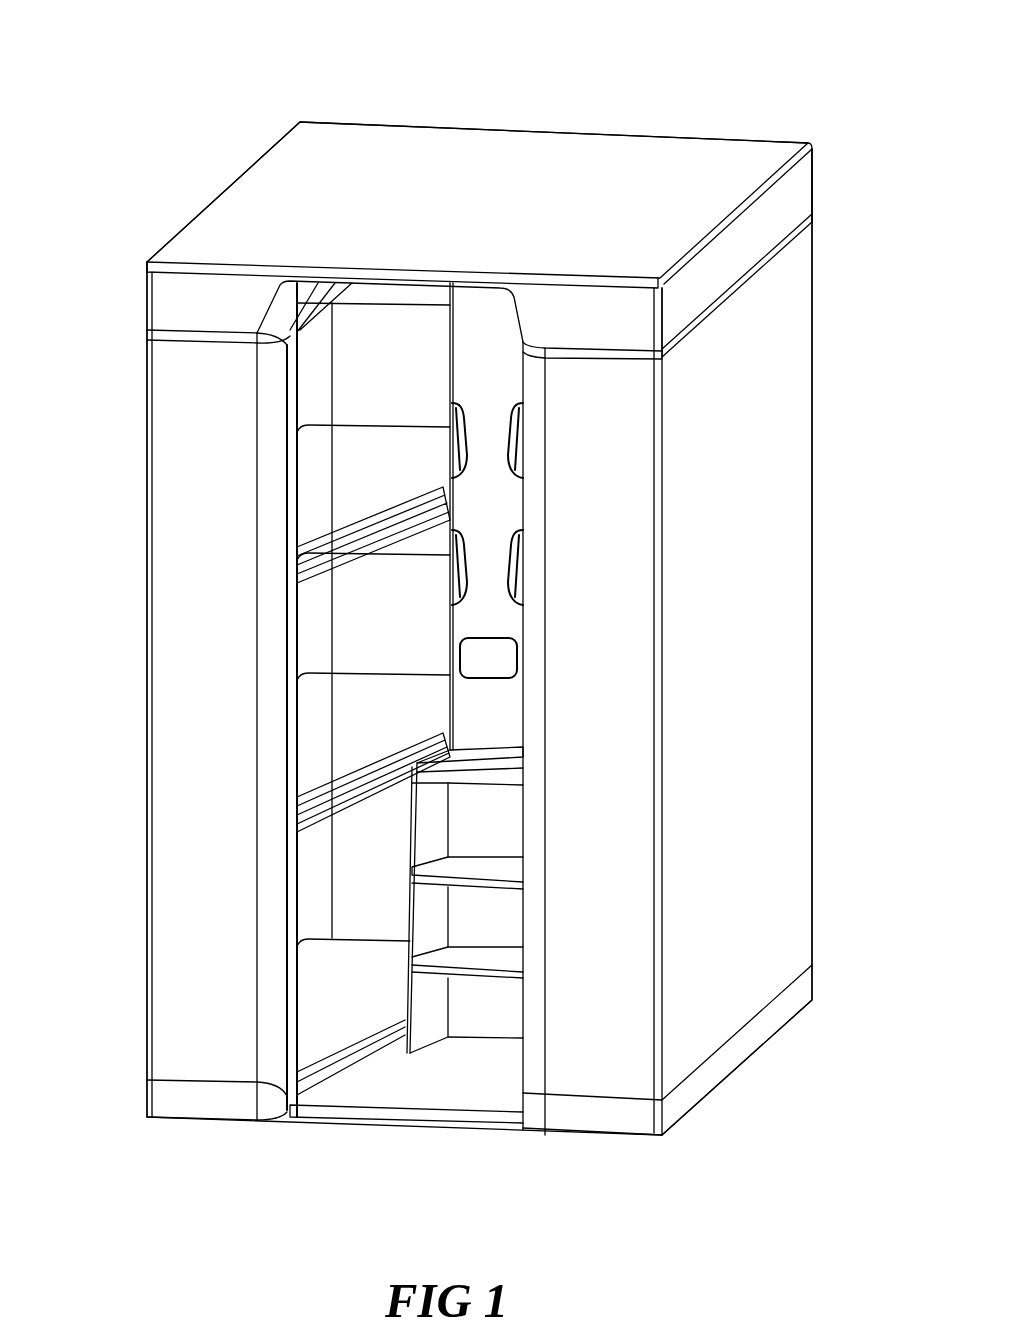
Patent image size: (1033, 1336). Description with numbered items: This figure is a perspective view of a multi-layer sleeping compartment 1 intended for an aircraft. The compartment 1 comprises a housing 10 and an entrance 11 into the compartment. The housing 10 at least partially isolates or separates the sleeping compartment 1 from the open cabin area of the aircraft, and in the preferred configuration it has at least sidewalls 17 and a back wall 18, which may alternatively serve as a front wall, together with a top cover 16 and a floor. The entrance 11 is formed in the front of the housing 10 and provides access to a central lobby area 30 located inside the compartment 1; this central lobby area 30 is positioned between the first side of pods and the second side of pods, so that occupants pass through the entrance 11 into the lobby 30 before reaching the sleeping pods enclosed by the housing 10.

The multi-layer sleeping compartment 1 is at (783, 66).
The housing 10 is at (780, 540).
The entrance 11 is at (522, 1128).
The top cover 16 is at (273, 170).
The sidewalls 17 is at (145, 930).
The back wall 18 is at (860, 266).
The central lobby area 30 is at (492, 1092).